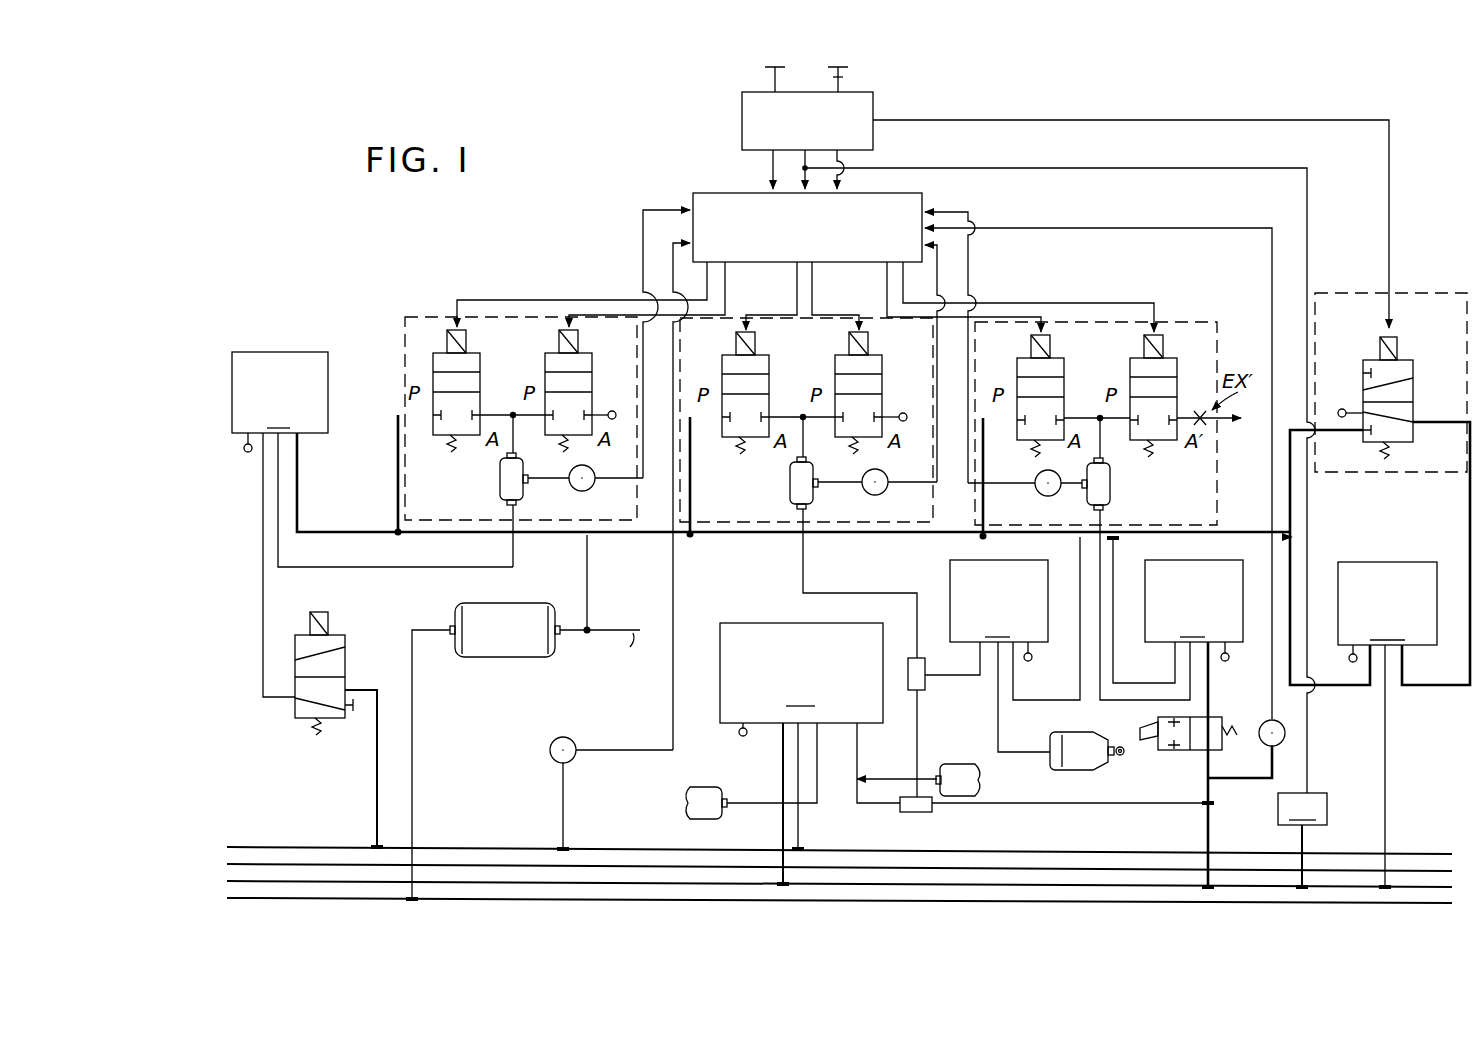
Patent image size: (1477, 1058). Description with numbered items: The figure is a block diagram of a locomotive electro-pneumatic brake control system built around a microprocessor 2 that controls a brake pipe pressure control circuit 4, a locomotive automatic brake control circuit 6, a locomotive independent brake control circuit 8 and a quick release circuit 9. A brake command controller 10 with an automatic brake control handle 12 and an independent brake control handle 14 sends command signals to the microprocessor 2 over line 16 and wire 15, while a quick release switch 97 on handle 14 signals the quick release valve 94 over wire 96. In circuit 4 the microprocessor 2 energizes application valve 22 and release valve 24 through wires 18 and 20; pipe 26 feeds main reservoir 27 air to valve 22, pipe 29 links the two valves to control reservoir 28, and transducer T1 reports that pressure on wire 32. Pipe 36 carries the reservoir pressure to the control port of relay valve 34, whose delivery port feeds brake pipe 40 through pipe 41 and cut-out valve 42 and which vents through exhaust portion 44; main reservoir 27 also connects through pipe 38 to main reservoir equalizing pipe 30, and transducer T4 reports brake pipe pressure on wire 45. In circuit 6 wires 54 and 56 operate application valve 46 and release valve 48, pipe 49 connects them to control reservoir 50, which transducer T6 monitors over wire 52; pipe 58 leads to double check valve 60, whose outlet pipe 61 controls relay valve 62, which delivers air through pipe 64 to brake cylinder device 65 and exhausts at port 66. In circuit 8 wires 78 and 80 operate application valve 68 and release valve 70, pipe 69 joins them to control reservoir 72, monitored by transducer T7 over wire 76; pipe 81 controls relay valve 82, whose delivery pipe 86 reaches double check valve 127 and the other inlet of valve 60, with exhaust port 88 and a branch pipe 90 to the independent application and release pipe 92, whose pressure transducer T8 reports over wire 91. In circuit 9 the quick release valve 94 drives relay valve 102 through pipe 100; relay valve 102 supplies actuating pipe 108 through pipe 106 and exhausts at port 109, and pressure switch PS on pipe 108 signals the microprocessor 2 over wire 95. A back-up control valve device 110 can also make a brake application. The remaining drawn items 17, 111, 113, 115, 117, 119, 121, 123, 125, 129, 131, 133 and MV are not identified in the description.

The microprocessor 2 is at (690, 190).
The brake command controller 10 is at (740, 112).
The automatic brake control handle 12 is at (765, 80).
The independent brake control handle 14 is at (848, 67).
The wire 15 is at (852, 155).
The line 16 is at (773, 163).
The brake controller output line 17 is at (805, 168).
The wire 18 is at (660, 278).
The wire 20 is at (725, 298).
The application valve 22 is at (440, 350).
The release valve 24 is at (586, 350).
The pipe 26 is at (398, 488).
The main reservoir 27 is at (515, 641).
The control reservoir 28 is at (500, 480).
The pipe 29 is at (513, 413).
The main reservoir equalizing pipe 30 is at (518, 898).
The wire 32 is at (643, 205).
The relay valve 34 is at (280, 524).
The pipe 36 is at (283, 462).
The pipe 38 is at (412, 718).
The brake pipe 40 is at (466, 847).
The pipe 41 is at (377, 774).
The cut-out valve 42 is at (340, 630).
The exhaust portion 44 is at (240, 450).
The wire 45 is at (673, 243).
The application valve 46 is at (730, 352).
The release valve 48 is at (876, 352).
The pipe 49 is at (803, 415).
The control reservoir 50 is at (790, 482).
The wire 52 is at (937, 255).
The wire 54 is at (797, 278).
The wire 56 is at (812, 278).
The pipe 58 is at (810, 562).
The double check valve 60 is at (910, 658).
The pipe 61 is at (975, 650).
The relay valve 62 is at (1015, 618).
The pipe 64 is at (998, 723).
The locomotive brake cylinder device 65 is at (1065, 770).
The exhaust port 66 is at (1032, 660).
The application valve 68 is at (1025, 355).
The pipe 69 is at (1100, 416).
The release valve 70 is at (1172, 355).
The control reservoir 72 is at (1110, 482).
The wire 76 is at (968, 212).
The wire 78 is at (887, 300).
The wire 80 is at (903, 283).
The pipe 81 is at (1172, 648).
The relay valve 82 is at (1171, 605).
The pipe 86 is at (917, 712).
The exhaust port 88 is at (1230, 660).
The branch pipe 90 is at (1208, 830).
The wire 91 is at (980, 228).
The independent application and release pipe 92 is at (1033, 868).
The quick release valve 94 is at (1408, 358).
The wire 95 is at (1000, 168).
The wire 96 is at (1000, 120).
The quick release switch 97 is at (843, 77).
The pipe 100 is at (1468, 480).
The relay valve 102 is at (1387, 603).
The pipe 106 is at (1385, 750).
The actuating pipe 108 is at (612, 882).
The exhaust port 109 is at (1350, 660).
The back-up control valve device 110 is at (801, 673).
The pipe 111 is at (810, 728).
The reservoir 113 is at (690, 790).
The pipe 115 is at (762, 805).
The pipe 117 is at (817, 762).
The pipe 119 is at (798, 830).
The pipe 121 is at (781, 728).
The pipe 123 is at (783, 788).
The pipe 125 is at (858, 730).
The double check valve 127 is at (915, 812).
The pipe 129 is at (882, 805).
The exhaust port 131 is at (738, 735).
The reservoir 133 is at (960, 766).
The brake pipe pressure control circuit 4 is at (521, 338).
The locomotive automatic brake control circuit 6 is at (810, 340).
The locomotive independent brake control circuit 8 is at (1103, 343).
The quick release circuit 9 is at (1346, 326).
The pressure transducer T1 is at (586, 491).
The transducer T4 is at (555, 738).
The pressure transducer T6 is at (880, 495).
The transducer T7 is at (1045, 496).
The transducer T8 is at (1268, 746).
The magnet valve MV is at (1152, 745).
The pressure switch PS is at (1302, 841).